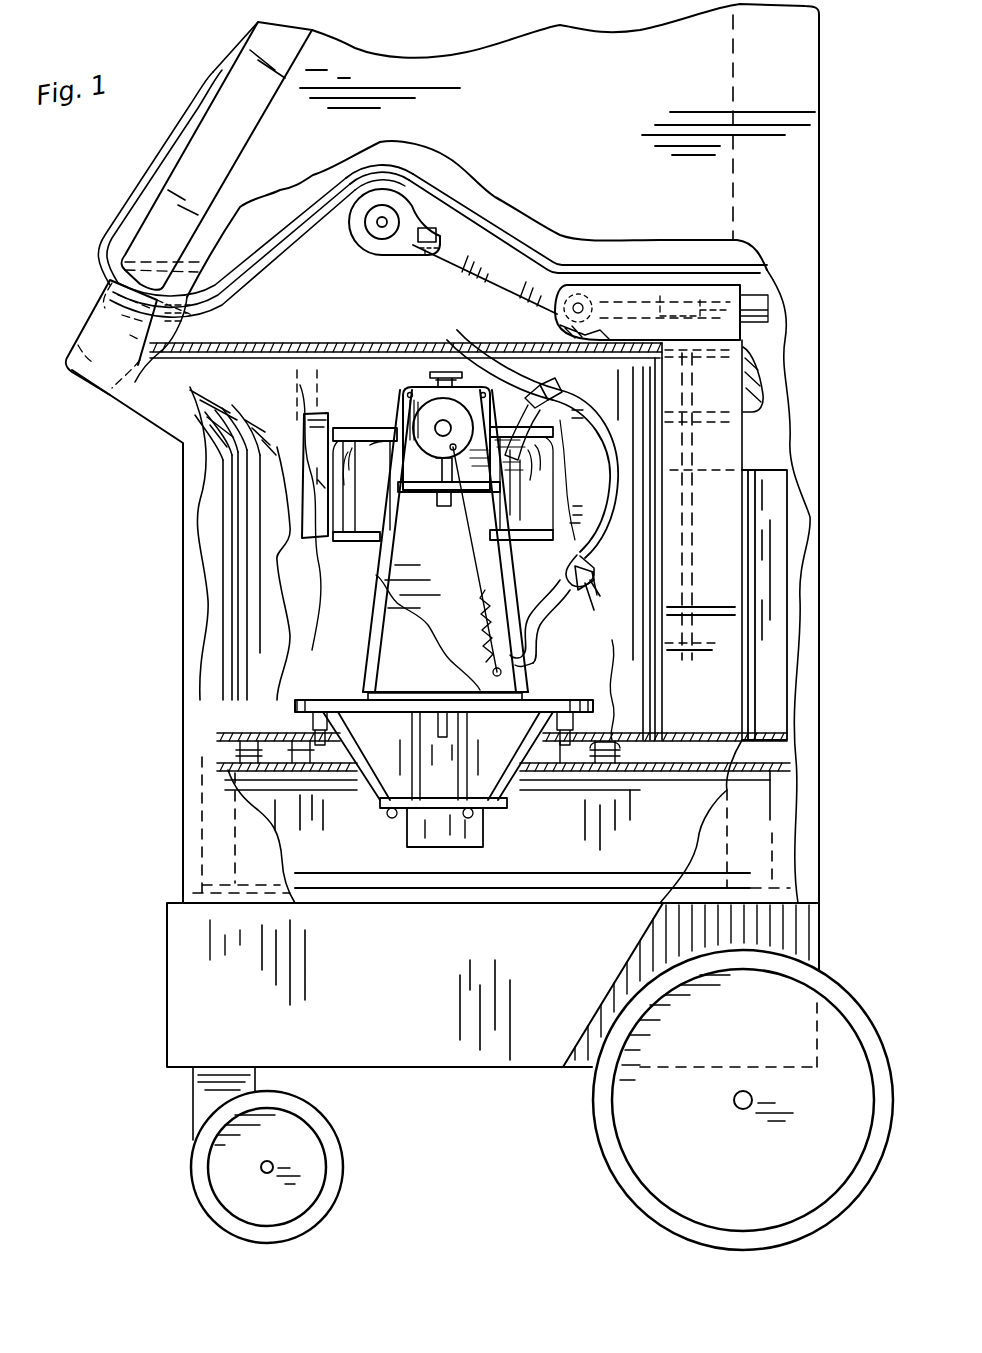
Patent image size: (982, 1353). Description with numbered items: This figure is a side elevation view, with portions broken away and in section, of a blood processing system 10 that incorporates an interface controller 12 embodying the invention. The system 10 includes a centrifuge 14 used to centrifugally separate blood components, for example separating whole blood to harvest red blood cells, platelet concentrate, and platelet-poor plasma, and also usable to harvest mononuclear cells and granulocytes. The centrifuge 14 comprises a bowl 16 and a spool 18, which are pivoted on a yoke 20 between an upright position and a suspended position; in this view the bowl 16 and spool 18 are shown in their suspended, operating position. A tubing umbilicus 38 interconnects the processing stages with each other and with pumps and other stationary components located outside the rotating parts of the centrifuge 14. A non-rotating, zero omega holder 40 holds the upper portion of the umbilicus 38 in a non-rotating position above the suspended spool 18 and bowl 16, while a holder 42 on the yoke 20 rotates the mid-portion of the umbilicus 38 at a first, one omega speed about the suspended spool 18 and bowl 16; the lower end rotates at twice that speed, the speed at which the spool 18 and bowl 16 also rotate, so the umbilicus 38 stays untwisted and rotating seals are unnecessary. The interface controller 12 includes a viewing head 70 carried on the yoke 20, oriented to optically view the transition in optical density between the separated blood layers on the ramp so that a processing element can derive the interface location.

The blood processing system 10 is at (605, 94).
The interface controller 12 is at (306, 466).
The centrifuge 14 is at (366, 412).
The bowl 16 is at (337, 548).
The spool 18 is at (368, 570).
The yoke 20 is at (575, 555).
The tubing umbilicus 38 is at (423, 299).
The non-rotating holder 40 is at (430, 235).
The holder 42 is at (594, 598).
The viewing head 70 is at (308, 508).